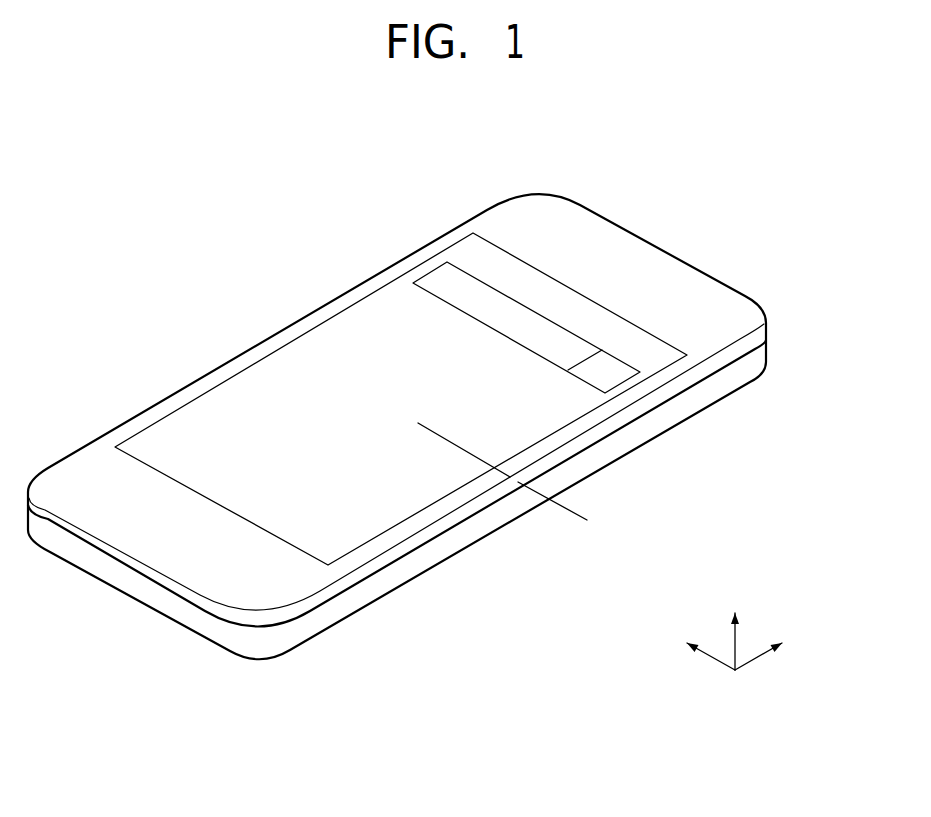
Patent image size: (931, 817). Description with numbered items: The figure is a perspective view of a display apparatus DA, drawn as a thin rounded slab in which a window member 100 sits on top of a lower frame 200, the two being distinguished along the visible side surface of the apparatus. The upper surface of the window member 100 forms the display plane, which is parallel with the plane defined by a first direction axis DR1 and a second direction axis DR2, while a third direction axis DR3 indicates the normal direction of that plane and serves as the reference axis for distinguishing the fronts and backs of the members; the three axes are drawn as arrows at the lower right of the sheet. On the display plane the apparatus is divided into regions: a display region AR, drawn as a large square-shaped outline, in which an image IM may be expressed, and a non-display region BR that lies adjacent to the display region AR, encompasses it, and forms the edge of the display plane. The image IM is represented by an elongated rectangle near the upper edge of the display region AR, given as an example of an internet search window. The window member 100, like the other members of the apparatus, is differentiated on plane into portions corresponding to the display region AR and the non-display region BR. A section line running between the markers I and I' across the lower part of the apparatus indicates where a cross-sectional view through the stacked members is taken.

The display apparatus DA is at (745, 172).
The window member 100 is at (760, 318).
The lower frame 200 is at (760, 354).
The display region AR is at (398, 305).
The non-display region BR is at (575, 237).
The image IM is at (430, 270).
The section line I is at (552, 522).
The section line I' is at (436, 450).
The first direction axis DR1 is at (695, 643).
The second direction axis DR2 is at (778, 643).
The third direction axis DR3 is at (734, 629).